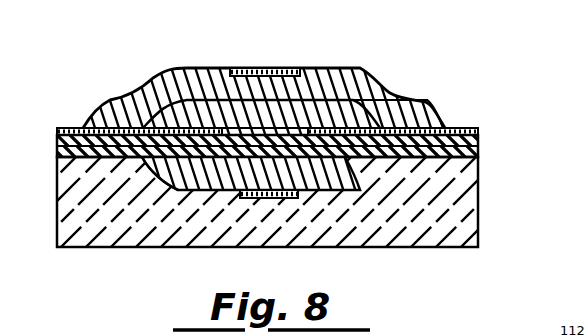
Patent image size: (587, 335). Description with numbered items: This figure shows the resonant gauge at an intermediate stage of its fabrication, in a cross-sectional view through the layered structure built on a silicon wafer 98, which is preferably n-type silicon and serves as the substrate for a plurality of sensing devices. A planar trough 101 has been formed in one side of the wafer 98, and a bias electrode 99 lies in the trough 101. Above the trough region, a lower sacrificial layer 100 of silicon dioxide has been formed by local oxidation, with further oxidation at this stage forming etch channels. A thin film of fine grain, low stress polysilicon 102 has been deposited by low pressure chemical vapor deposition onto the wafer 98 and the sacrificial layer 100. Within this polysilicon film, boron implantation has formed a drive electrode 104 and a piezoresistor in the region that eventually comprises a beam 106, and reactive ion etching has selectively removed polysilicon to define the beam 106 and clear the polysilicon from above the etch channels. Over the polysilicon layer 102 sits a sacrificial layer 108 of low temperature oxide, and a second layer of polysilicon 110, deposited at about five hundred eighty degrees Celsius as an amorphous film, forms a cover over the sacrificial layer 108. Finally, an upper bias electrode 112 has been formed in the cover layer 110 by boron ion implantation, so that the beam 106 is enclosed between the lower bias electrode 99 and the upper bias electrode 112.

The silicon wafer 98 is at (456, 222).
The bias electrode 99 is at (277, 198).
The lower sacrificial layer 100 is at (335, 175).
The trough 101 is at (165, 173).
The polysilicon layer 102 is at (68, 128).
The drive electrode 104 is at (468, 128).
The beam 106 is at (300, 130).
The sacrificial layer 108 is at (198, 110).
The second layer of polysilicon 110 is at (135, 97).
The upper bias electrode 112 is at (268, 68).